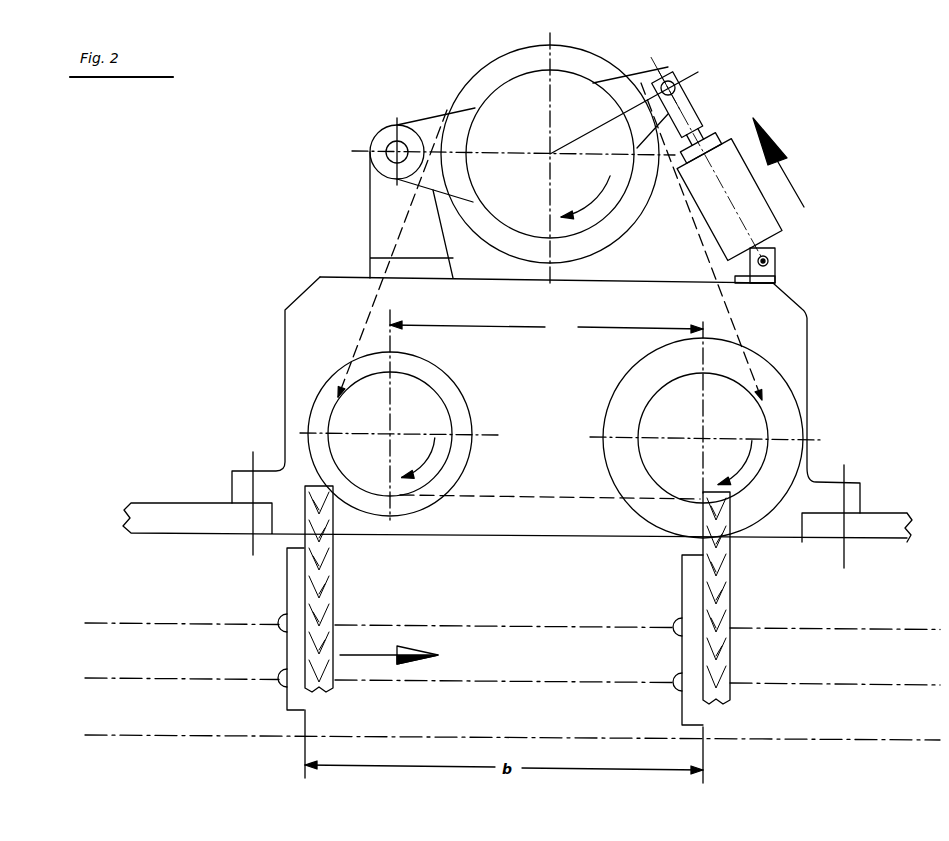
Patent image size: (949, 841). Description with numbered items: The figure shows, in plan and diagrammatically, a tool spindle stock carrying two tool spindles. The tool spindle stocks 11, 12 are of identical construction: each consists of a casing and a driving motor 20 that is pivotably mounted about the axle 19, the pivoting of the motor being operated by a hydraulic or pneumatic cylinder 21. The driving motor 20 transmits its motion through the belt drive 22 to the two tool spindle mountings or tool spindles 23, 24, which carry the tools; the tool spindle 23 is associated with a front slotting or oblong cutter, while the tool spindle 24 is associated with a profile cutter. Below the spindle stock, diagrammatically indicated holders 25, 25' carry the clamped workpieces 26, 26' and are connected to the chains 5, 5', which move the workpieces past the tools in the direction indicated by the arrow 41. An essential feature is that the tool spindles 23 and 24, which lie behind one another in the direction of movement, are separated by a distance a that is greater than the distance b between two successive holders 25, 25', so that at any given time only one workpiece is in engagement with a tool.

The chain 5 is at (512, 657).
The chain 5' is at (512, 665).
The tool spindle stock 11 is at (445, 172).
The tool spindle stock 12 is at (280, 250).
The axle 19 is at (390, 143).
The driving motor 20 is at (570, 93).
The hydraulic or pneumatic cylinder 21 is at (765, 227).
The belt drive 22 is at (730, 318).
The tool spindle 23 is at (322, 425).
The tool spindle 24 is at (717, 427).
The holder 25 is at (268, 637).
The holder 25' is at (665, 640).
The workpiece 26 is at (356, 589).
The workpiece 26' is at (745, 598).
The direction of feed 41 is at (389, 649).